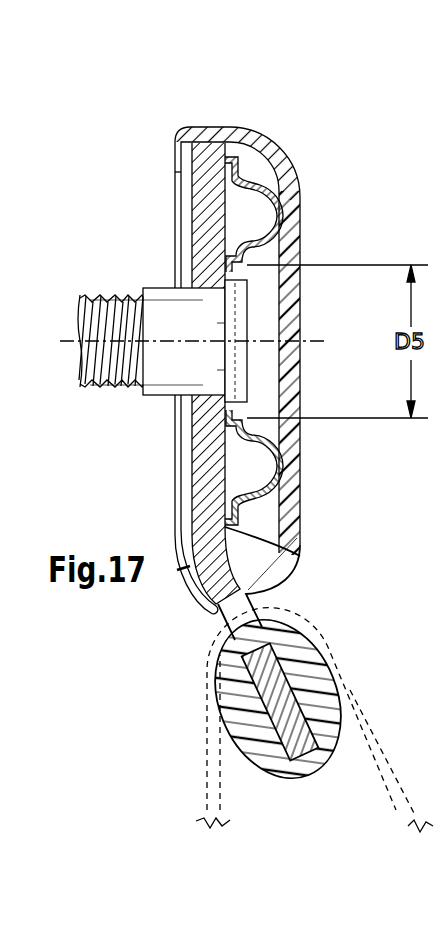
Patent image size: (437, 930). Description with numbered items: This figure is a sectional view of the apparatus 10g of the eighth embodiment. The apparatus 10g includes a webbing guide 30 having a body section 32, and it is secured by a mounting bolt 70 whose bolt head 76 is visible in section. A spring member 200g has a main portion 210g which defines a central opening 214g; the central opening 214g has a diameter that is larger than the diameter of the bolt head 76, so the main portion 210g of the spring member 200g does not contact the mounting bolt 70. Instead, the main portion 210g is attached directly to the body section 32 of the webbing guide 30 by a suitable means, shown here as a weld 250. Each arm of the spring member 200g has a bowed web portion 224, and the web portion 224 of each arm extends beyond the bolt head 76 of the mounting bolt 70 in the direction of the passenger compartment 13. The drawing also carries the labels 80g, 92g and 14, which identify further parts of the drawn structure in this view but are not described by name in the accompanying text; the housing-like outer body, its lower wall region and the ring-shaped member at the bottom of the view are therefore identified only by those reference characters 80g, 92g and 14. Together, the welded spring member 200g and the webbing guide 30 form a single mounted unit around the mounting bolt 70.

The apparatus 10g is at (266, 94).
The housing body 80g is at (310, 155).
The webbing guide 30 is at (180, 185).
The body section 32 is at (277, 553).
The bottom wall 92g is at (262, 527).
The central opening 214g is at (227, 262).
The web portion 224 is at (277, 205).
The spring member 200g is at (296, 472).
The main portion 210g is at (220, 420).
The weld 250 is at (240, 408).
The mounting bolt 70 is at (110, 282).
The bolt head 76 is at (240, 303).
The ring / rod 14 is at (405, 790).
The passenger compartment 13 is at (368, 253).